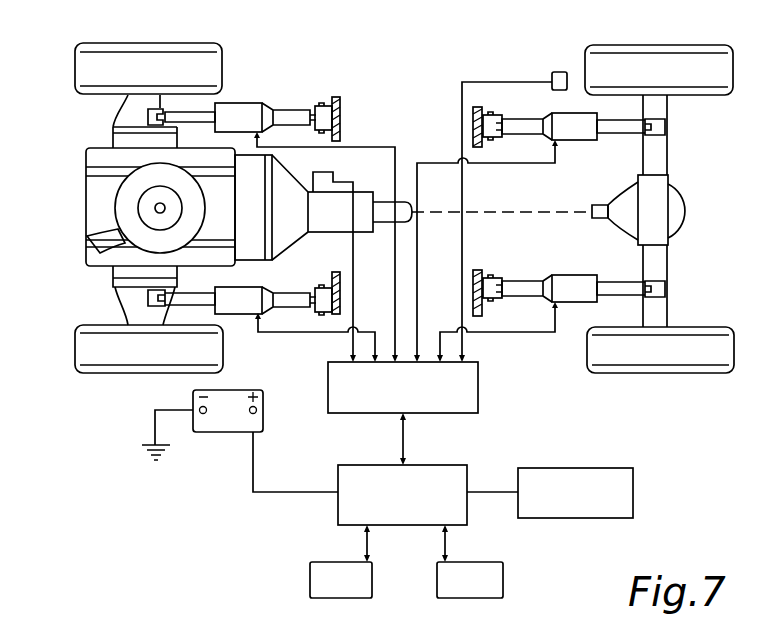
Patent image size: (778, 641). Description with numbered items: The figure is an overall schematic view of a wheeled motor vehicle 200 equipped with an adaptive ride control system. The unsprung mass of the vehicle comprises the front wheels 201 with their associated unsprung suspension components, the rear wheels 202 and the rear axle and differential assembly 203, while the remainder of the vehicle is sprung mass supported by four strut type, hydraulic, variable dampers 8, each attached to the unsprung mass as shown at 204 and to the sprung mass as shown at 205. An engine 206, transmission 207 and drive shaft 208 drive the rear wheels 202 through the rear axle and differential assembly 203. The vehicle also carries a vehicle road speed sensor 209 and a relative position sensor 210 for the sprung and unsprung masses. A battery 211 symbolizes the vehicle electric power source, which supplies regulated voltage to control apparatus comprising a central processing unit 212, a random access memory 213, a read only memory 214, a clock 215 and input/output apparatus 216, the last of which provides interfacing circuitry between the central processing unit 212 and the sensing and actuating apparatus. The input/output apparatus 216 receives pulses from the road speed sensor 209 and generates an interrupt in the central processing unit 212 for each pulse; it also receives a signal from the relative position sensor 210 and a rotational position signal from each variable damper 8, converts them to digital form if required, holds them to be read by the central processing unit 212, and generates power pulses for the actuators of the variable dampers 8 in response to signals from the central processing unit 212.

The wheeled motor vehicle 200 is at (310, 69).
The front wheels 201 is at (142, 43).
The rear wheels 202 is at (650, 45).
The rear axle and differential assembly 203 is at (655, 165).
The attachment to unsprung mass 204 is at (148, 117).
The attachment to sprung mass 205 is at (473, 115).
The engine 206 is at (86, 197).
The transmission 207 is at (345, 213).
The drive shaft 208 is at (400, 207).
The vehicle road speed sensor 209 is at (325, 172).
The relative position sensor 210 is at (560, 72).
The battery 211 is at (233, 432).
The central processing unit (CPU) 212 is at (436, 465).
The random access memory (RAM) 213 is at (350, 598).
The read only memory (ROM) 214 is at (503, 580).
The clock 215 is at (635, 488).
The input/output (I/O) apparatus 216 is at (478, 382).
The variable dampers 8 is at (235, 99).